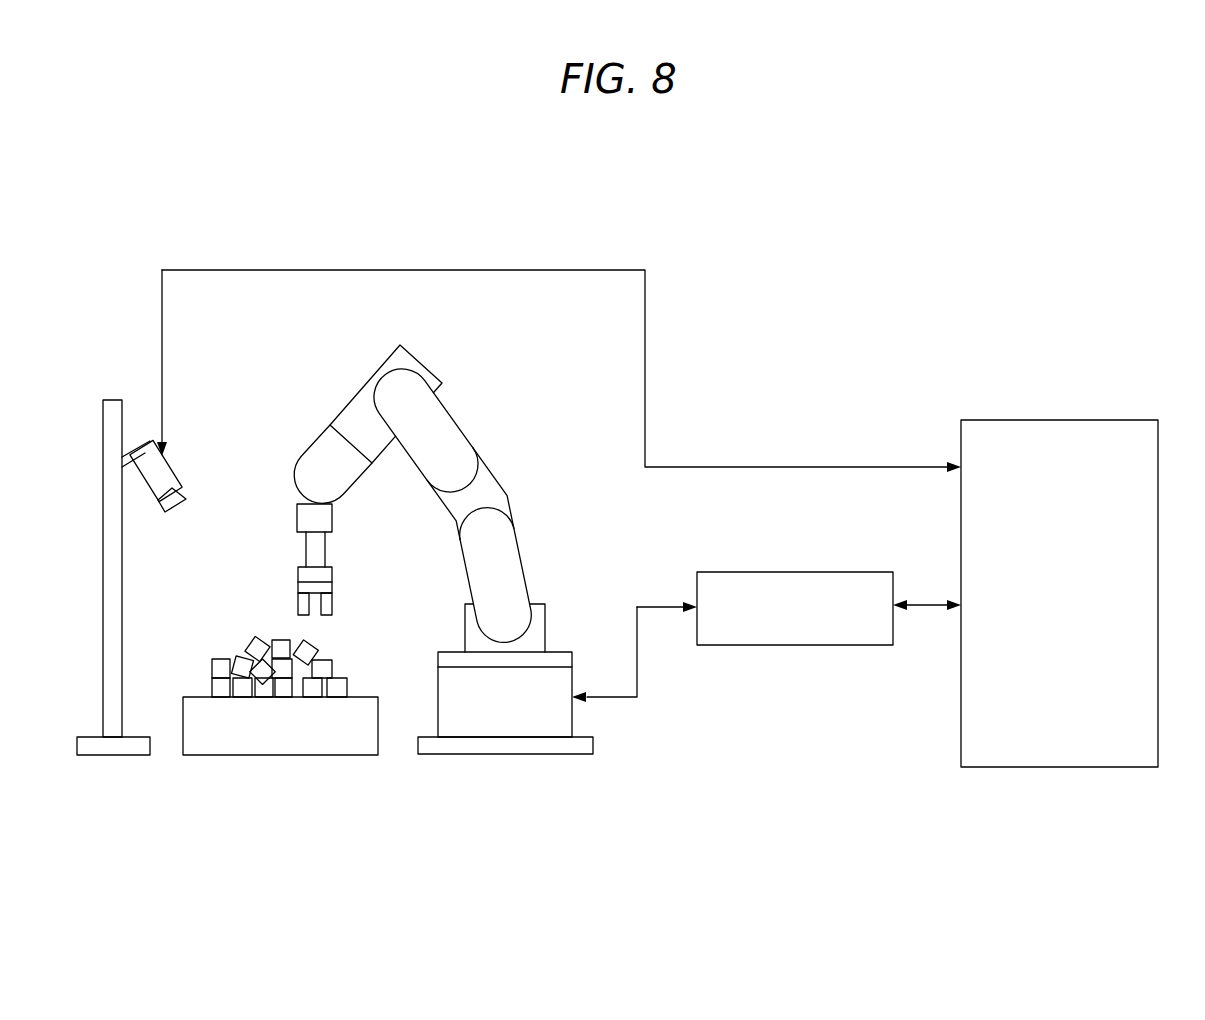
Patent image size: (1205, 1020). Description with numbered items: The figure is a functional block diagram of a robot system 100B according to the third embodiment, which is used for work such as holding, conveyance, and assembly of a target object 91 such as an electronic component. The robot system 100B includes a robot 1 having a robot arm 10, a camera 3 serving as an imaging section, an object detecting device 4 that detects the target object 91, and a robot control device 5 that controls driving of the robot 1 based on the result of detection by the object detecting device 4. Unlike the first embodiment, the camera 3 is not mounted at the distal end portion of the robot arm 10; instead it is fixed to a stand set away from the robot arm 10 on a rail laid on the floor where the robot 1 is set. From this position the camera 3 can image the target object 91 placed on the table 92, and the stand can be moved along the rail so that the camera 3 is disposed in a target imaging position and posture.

The robot system 100B is at (617, 473).
The robot 1 is at (443, 527).
The robot arm 10 is at (452, 402).
The camera 3 is at (158, 475).
The object detecting device 4 is at (1062, 418).
The robot control device 5 is at (788, 570).
The target object 91 is at (240, 658).
The table 92 is at (277, 735).